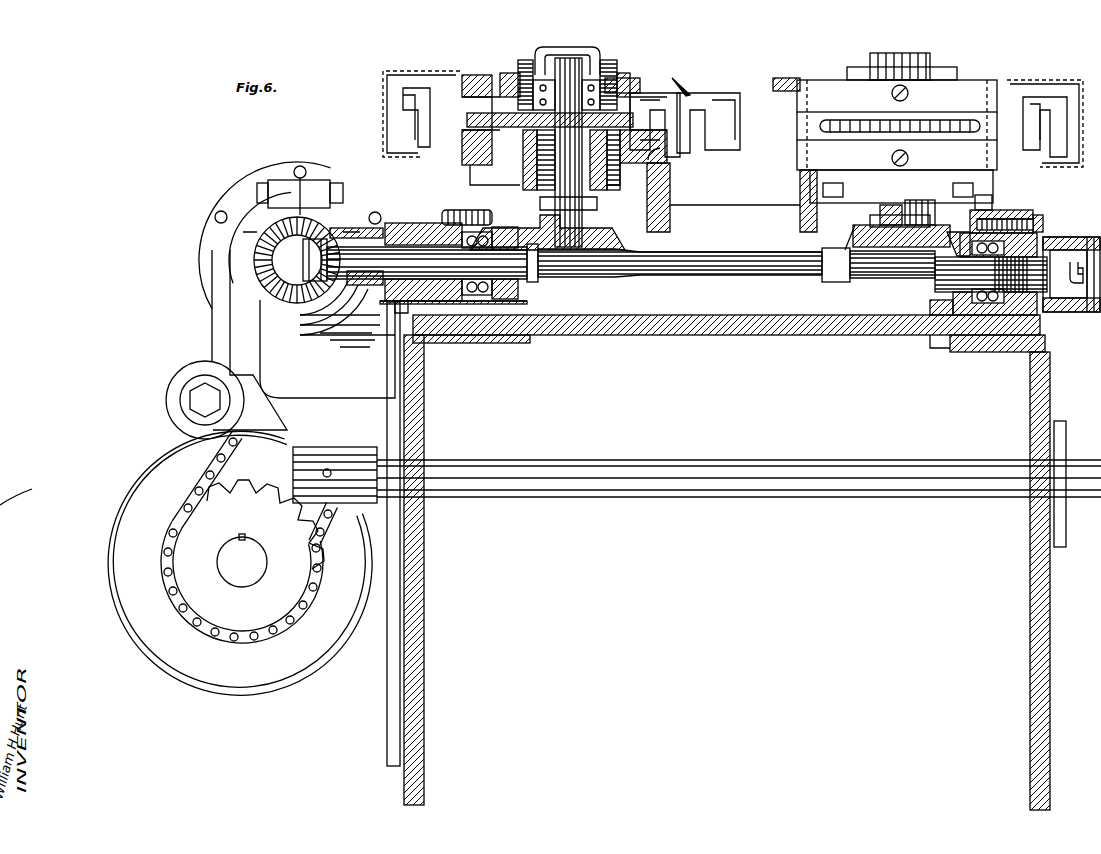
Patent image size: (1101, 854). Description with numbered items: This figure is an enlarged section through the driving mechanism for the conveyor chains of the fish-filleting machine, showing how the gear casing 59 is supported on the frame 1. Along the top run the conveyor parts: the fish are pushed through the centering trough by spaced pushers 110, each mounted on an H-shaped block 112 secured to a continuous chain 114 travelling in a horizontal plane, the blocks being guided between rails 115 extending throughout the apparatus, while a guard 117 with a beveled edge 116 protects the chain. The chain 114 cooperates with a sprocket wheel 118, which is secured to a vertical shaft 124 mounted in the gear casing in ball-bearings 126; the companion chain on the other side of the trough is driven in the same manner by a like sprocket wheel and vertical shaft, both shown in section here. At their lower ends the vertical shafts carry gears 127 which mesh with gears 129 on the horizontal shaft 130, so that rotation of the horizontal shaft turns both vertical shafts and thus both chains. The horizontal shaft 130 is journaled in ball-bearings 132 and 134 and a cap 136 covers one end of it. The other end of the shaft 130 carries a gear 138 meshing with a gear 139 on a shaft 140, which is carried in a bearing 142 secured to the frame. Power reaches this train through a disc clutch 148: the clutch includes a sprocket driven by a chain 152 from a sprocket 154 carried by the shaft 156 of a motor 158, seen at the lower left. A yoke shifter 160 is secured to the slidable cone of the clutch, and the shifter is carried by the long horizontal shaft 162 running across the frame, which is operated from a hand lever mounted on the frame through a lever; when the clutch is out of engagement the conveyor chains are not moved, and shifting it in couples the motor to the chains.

The frame 1 is at (1050, 392).
The gear casing 59 is at (995, 203).
The pusher 110 is at (430, 140).
The H-shaped block 112 is at (673, 140).
The continuous chain 114 is at (547, 118).
The rail 115 is at (682, 82).
The beveled edge 116 is at (660, 78).
The guard 117 is at (425, 68).
The sprocket wheel 118 is at (505, 80).
The vertical shaft 124 is at (570, 100).
The ball-bearing 126 is at (492, 210).
The gear 127 is at (608, 232).
The gear 129 is at (515, 290).
The horizontal shaft 130 is at (724, 278).
The ball-bearing 132 is at (482, 305).
The ball-bearing 134 is at (975, 315).
The cap 136 is at (1088, 312).
The gear 138 is at (355, 235).
The gear 139 is at (290, 230).
The shaft 140 is at (300, 240).
The bearing 142 is at (318, 345).
The disc clutch 148 is at (212, 243).
The chain 152 is at (178, 503).
The sprocket 154 is at (256, 488).
The shaft 156 is at (242, 578).
The motor 158 is at (238, 688).
The yoke shifter 160 is at (214, 290).
The shaft 162 is at (692, 490).